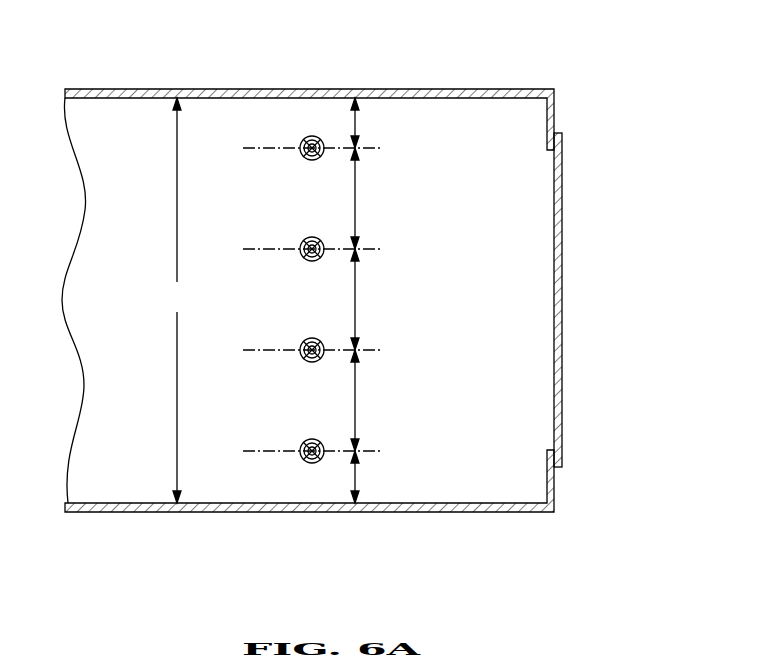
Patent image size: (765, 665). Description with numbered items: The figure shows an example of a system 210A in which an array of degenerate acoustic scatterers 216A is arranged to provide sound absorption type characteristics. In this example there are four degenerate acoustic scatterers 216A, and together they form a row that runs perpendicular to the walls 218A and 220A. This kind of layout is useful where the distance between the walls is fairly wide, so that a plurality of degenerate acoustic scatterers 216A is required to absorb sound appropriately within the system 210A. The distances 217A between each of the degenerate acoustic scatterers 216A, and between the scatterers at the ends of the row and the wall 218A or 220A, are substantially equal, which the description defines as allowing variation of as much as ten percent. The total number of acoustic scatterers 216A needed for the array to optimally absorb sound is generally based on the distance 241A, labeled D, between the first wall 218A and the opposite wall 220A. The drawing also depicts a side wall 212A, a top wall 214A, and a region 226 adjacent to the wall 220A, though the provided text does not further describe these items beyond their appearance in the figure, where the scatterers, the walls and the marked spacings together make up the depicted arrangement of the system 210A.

The system 210A is at (575, 109).
The side wall 212A is at (563, 272).
The top wall 214A is at (471, 89).
The degenerate acoustic scatterers 216A is at (306, 136).
The distances 217A is at (356, 120).
The wall 218A is at (300, 512).
The wall 220A is at (237, 88).
The cavity region 226 is at (121, 113).
The distance 241A is at (177, 343).